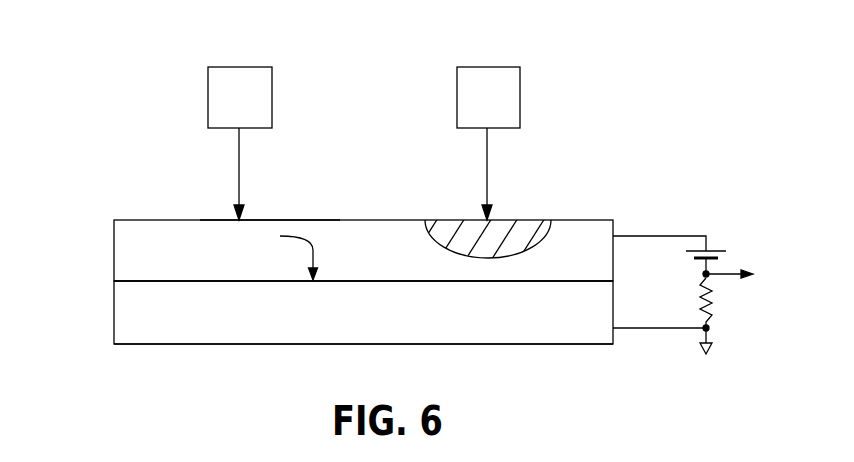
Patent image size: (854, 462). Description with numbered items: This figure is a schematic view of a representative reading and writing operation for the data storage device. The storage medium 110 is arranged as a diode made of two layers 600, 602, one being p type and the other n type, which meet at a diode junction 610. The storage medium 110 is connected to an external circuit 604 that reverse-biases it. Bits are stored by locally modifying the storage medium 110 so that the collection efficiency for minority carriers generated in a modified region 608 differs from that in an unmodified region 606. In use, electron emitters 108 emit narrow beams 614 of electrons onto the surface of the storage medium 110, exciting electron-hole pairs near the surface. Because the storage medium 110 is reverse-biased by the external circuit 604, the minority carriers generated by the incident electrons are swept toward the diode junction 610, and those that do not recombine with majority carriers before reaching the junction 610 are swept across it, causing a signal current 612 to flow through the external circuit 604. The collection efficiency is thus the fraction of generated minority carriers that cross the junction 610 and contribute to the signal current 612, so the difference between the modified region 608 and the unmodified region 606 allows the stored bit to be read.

The electron emitter 108 is at (255, 73).
The storage medium 110 is at (487, 355).
The layer 600 is at (114, 252).
The layer 602 is at (114, 313).
The external circuit 604 is at (714, 241).
The unmodified region 606 is at (273, 220).
The modified region 608 is at (528, 240).
The diode junction 610 is at (232, 283).
The signal current 612 is at (752, 274).
The narrow beam of electrons 614 is at (239, 175).